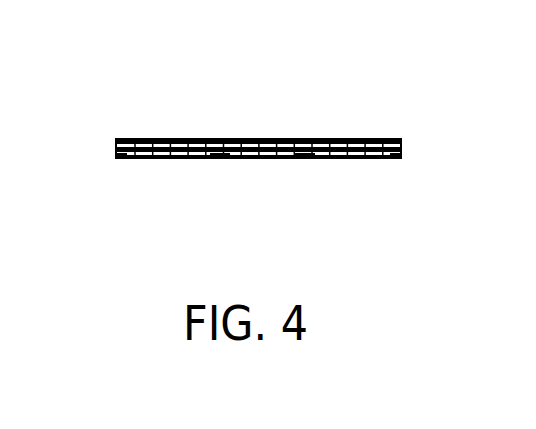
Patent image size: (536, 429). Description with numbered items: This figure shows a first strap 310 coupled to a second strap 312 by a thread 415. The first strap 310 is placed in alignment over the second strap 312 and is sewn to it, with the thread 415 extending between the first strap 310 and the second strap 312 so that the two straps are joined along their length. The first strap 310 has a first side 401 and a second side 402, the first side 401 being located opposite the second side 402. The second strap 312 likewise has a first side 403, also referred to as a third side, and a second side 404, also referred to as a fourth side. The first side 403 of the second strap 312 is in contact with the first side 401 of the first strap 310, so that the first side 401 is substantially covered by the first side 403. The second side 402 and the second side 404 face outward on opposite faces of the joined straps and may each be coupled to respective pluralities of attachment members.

The first strap 310 is at (201, 138).
The second strap 312 is at (303, 158).
The thread 415 is at (222, 158).
The first side 401 is at (124, 177).
The second side 402 is at (121, 119).
The first side 403 is at (392, 122).
The second side 404 is at (397, 180).